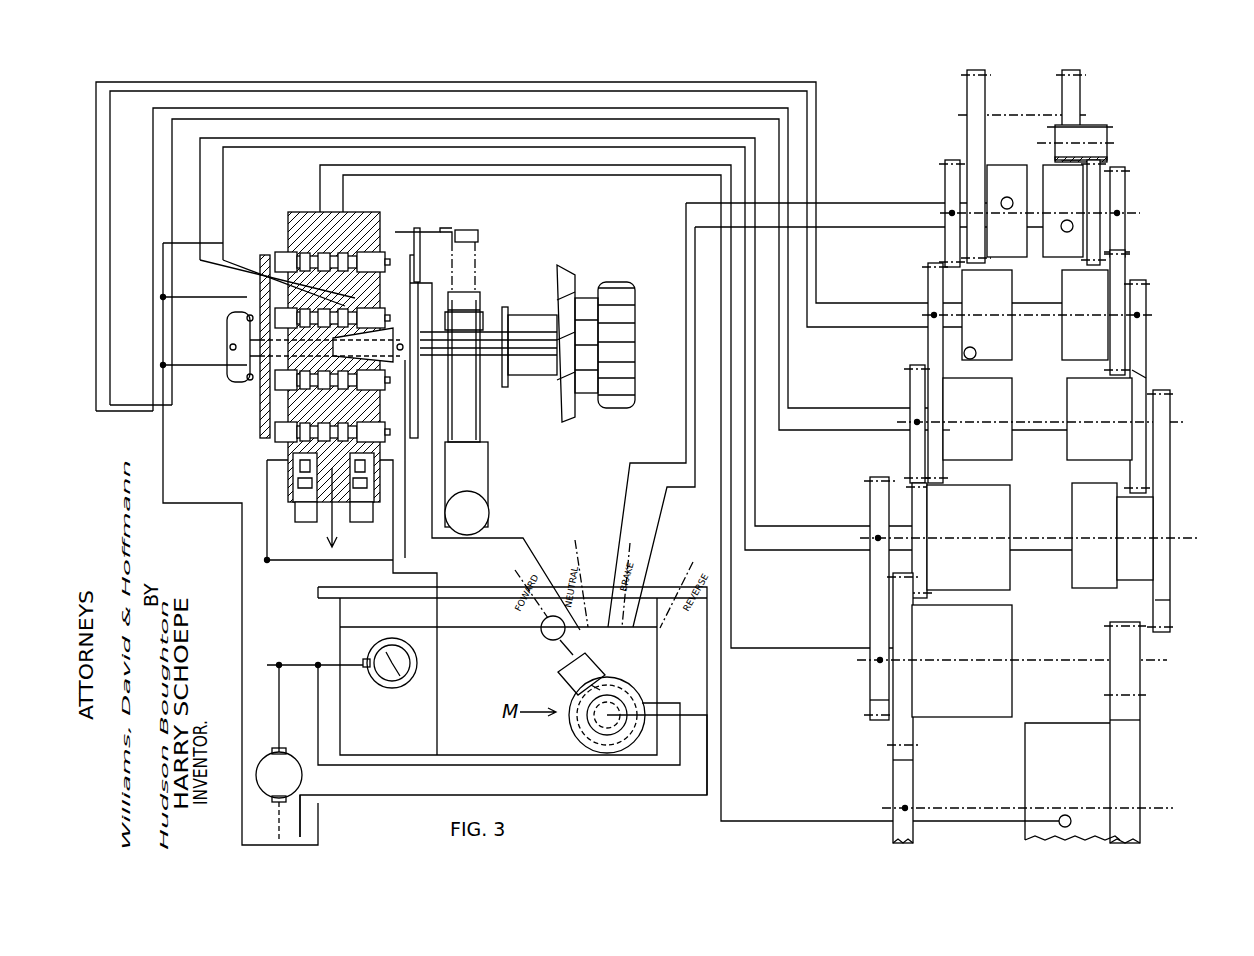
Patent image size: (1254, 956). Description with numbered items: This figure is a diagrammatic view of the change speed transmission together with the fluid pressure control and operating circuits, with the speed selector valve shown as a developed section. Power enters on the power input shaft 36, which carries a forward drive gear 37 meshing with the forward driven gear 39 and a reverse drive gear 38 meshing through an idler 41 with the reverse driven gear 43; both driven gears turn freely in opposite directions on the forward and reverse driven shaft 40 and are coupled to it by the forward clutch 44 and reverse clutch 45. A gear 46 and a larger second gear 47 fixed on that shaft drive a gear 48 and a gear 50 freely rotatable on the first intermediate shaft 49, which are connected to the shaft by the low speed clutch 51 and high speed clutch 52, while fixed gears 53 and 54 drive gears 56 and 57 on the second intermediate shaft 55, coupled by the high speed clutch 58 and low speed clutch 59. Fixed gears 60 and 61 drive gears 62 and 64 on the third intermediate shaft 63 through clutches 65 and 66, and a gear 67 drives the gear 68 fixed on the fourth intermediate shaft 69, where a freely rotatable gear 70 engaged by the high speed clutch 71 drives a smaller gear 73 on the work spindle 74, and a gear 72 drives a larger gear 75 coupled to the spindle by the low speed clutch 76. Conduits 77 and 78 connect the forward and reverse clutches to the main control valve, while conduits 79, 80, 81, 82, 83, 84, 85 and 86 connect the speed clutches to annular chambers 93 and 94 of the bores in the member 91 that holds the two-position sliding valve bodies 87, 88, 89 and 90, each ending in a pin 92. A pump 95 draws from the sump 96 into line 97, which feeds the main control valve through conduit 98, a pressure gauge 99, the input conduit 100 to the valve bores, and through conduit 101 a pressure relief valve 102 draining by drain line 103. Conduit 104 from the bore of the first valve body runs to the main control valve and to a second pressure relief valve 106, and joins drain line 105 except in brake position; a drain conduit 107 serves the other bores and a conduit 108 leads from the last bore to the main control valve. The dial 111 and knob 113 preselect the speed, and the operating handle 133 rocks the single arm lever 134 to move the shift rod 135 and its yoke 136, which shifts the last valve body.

The power input shaft 36 is at (1033, 97).
The forward drive gear 37 is at (985, 140).
The reverse drive gear 38 is at (1080, 98).
The forward driven gear 39 is at (998, 174).
The forward and reverse driven shaft 40 is at (1136, 204).
The idler 41 is at (1103, 128).
The reverse driven gear 43 is at (1083, 184).
The forward fluid pressure actuated friction clutch 44 is at (1014, 244).
The reverse fluid pressure actuated friction clutch 45 is at (1077, 244).
The gear 46 is at (945, 243).
The second gear 47 is at (1100, 236).
The gear 48 is at (972, 359).
The first intermediate shaft 49 is at (1158, 314).
The gear 50 is at (1128, 270).
The low speed fluid pressure actuated friction clutch 51 is at (1005, 294).
The high speed fluid pressure actuated friction clutch 52 is at (1070, 344).
The gear 53 is at (928, 344).
The gear 54 is at (1146, 332).
The second intermediate shaft 55 is at (1054, 408).
The gear 56 is at (948, 452).
The gear 57 is at (1146, 380).
The high speed fluid pressure actuated friction clutch 58 is at (1003, 393).
The low speed fluid pressure actuated friction clutch 59 is at (1070, 446).
The gear 60 is at (912, 448).
The gear 61 is at (1170, 410).
The gear 62 is at (928, 575).
The third intermediate shaft 63 is at (1050, 520).
The gear 64 is at (1168, 600).
The high speed fluid pressure actuated friction clutch 65 is at (1008, 500).
The low speed fluid pressure actuated friction clutch 66 is at (1078, 572).
The gear 67 is at (872, 590).
The gear 68 is at (872, 705).
The fourth intermediate shaft 69 is at (1032, 658).
The gear 70 is at (913, 736).
The high speed fluid pressure actuated friction clutch 71 is at (1012, 702).
The gear 72 is at (1140, 684).
The gear 73 is at (913, 780).
The work spindle 74 is at (959, 808).
The gear 75 is at (1140, 723).
The low speed fluid pressure actuated friction clutch 76 is at (1080, 705).
The fluid pressure conduit 77 is at (880, 200).
The fluid pressure conduit 78 is at (871, 230).
The fluid pressure conduit 79 is at (110, 398).
The fluid pressure conduit 80 is at (112, 412).
The fluid pressure conduit 81 is at (828, 408).
The fluid pressure conduit 82 is at (821, 431).
The pressure fluid conduit 83 is at (809, 524).
The pressure fluid conduit 84 is at (813, 550).
The fluid pressure conduit 85 is at (801, 648).
The pressure fluid conduit 86 is at (785, 822).
The sliding valve body 87 is at (268, 442).
The sliding valve body 88 is at (285, 387).
The sliding valve body 89 is at (386, 312).
The sliding valve body 90 is at (286, 240).
The member of the speed selector valve 91 is at (340, 252).
The pin or projection 92 is at (258, 432).
The annular chamber 93 is at (344, 338).
The annular chamber 94 is at (322, 345).
The pump 95 is at (300, 782).
The sump 96 is at (320, 816).
The fluid pressure line 97 is at (282, 718).
The conduit 98 is at (437, 767).
The pressure gauge 99 is at (408, 688).
The input conduit 100 is at (417, 556).
The conduit 101 is at (274, 542).
The pressure relief valve 102 is at (293, 472).
The drain line 103 is at (332, 536).
The fluid pressure conduit 104 is at (455, 664).
The drain line 105 is at (654, 798).
The pressure relief valve 106 is at (374, 472).
The drain conduit 107 is at (184, 242).
The pressure fluid conduit 108 is at (500, 524).
The rotatable dial 111 is at (586, 272).
The operating knob 113 is at (632, 286).
The operating handle 133 is at (488, 462).
The single arm lever 134 is at (478, 232).
The shift rod 135 is at (430, 230).
The yoke 136 is at (394, 229).